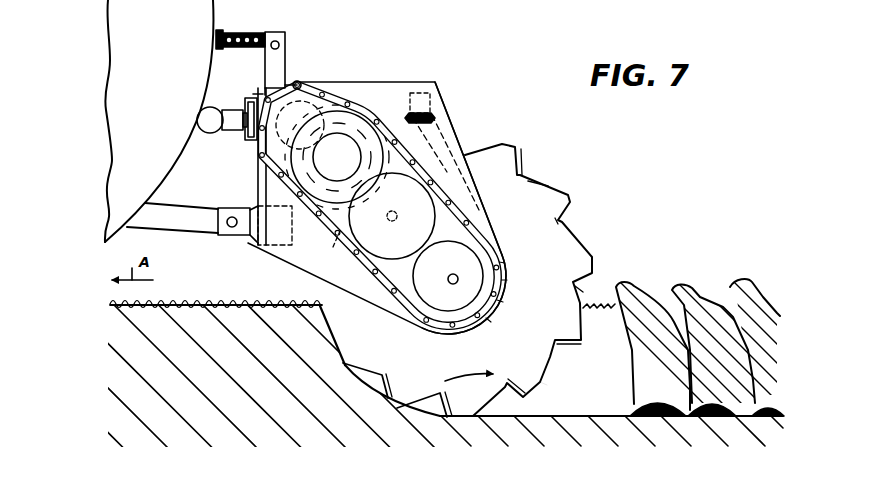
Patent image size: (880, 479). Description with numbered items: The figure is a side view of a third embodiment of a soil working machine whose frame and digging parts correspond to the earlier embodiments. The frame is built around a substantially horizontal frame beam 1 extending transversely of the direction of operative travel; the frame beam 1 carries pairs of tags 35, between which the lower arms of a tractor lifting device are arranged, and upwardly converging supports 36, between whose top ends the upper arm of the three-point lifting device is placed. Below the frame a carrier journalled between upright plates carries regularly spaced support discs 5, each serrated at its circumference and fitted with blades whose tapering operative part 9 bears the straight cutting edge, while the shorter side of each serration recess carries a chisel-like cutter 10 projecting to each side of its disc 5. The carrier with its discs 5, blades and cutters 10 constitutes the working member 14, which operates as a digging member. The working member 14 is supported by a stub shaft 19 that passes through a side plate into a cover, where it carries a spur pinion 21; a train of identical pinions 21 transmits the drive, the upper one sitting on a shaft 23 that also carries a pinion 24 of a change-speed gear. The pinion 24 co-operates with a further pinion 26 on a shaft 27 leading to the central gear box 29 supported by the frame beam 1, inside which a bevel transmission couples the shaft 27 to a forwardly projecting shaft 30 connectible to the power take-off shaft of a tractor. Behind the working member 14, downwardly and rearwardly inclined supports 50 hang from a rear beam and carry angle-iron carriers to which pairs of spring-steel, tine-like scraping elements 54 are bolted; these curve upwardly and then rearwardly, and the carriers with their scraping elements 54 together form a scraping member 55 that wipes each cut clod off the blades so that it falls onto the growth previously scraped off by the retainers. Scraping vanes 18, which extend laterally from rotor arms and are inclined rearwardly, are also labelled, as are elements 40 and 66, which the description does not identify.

The frame beam 1 is at (252, 251).
The support disc 5 is at (578, 241).
The operative part 9 is at (607, 285).
The cutter 10 is at (571, 208).
The working member 14 is at (548, 380).
The scraping vane 18 is at (448, 124).
The stub shaft 19 is at (421, 80).
The spur pinion 21 is at (353, 92).
The shaft 23 is at (347, 160).
The pinion 24 is at (357, 112).
The pinion 26 is at (306, 79).
The shaft 27 is at (256, 147).
The gear box 29 is at (253, 94).
The shaft 30 is at (238, 143).
The tags 35 is at (237, 209).
The supports 36 is at (280, 74).
The bearing block 40 is at (333, 237).
The support 50 is at (457, 142).
The scraping element 54 is at (537, 183).
The scraping member 55 is at (528, 182).
The chain guard 66 is at (513, 276).